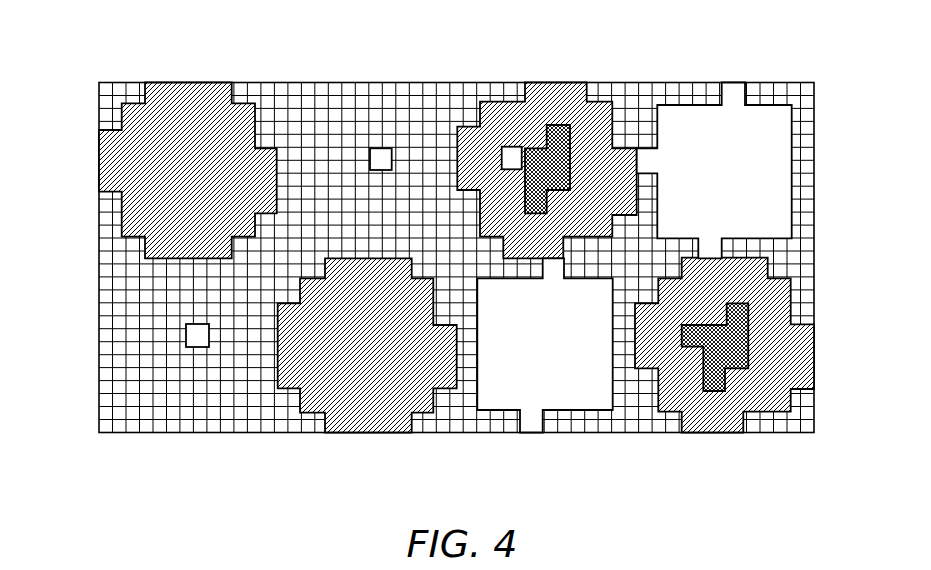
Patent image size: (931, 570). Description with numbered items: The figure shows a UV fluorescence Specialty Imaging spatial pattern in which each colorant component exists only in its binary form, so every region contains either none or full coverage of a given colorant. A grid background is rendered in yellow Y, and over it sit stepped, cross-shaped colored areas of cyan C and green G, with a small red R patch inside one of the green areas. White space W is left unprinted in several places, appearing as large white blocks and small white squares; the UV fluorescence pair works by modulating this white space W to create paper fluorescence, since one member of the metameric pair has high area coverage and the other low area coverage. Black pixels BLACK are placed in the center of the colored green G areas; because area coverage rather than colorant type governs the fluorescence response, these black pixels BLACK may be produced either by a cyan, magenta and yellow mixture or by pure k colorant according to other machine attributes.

The yellow colorant area Y is at (212, 432).
The cyan colorant area C is at (190, 82).
The green colorant area G is at (557, 82).
The black pixels BLACK is at (565, 124).
The white space W is at (734, 82).
The red colorant area R is at (512, 147).